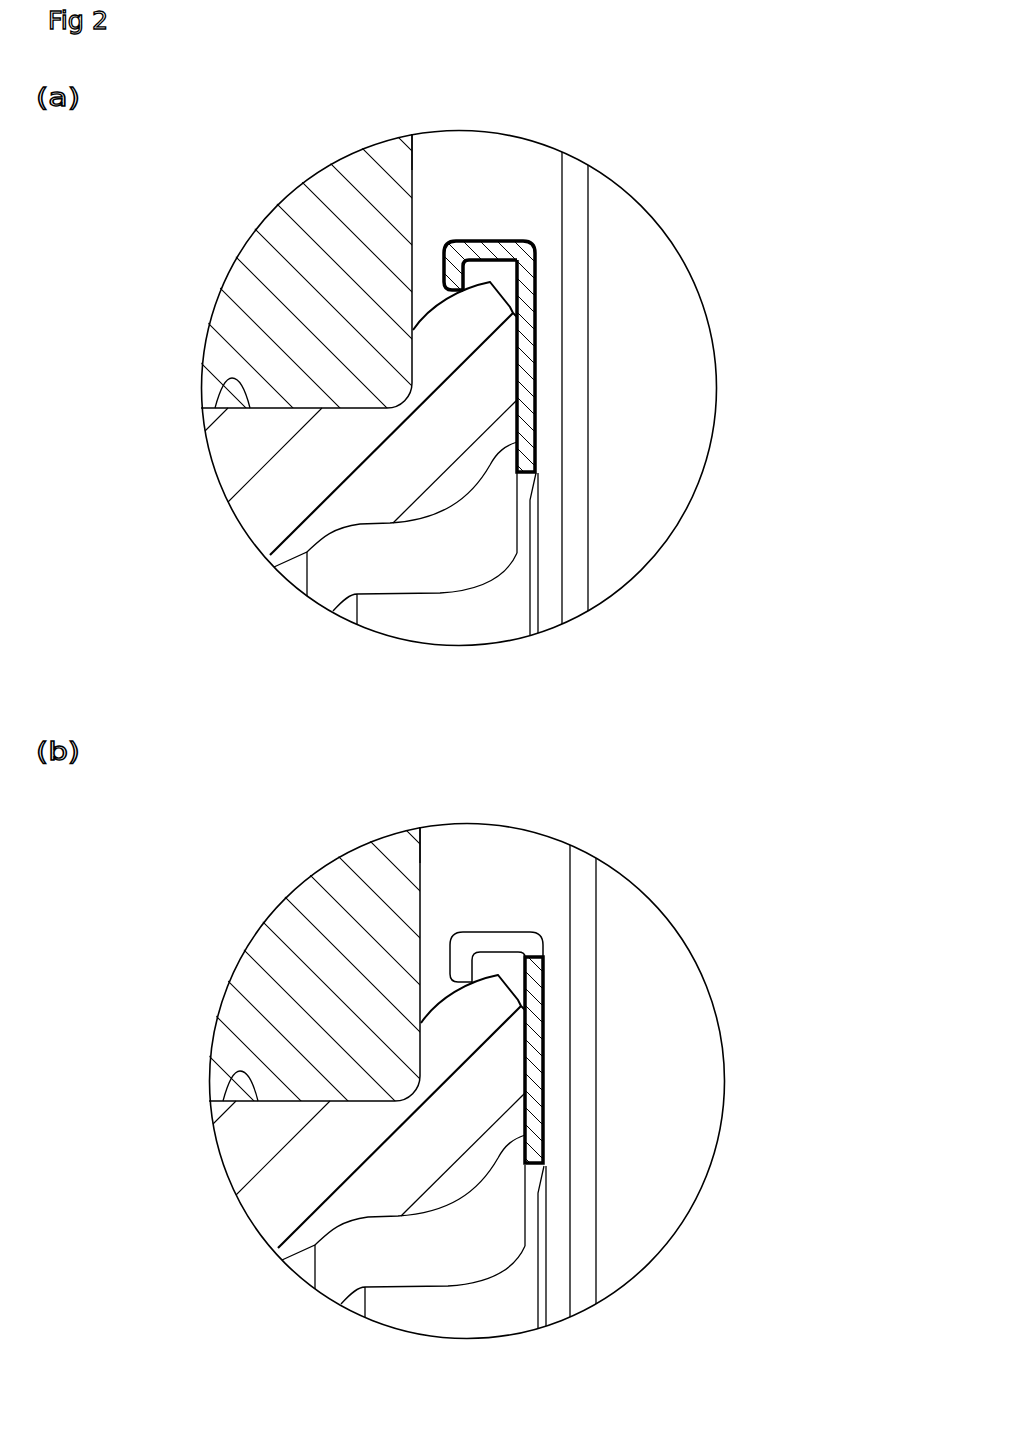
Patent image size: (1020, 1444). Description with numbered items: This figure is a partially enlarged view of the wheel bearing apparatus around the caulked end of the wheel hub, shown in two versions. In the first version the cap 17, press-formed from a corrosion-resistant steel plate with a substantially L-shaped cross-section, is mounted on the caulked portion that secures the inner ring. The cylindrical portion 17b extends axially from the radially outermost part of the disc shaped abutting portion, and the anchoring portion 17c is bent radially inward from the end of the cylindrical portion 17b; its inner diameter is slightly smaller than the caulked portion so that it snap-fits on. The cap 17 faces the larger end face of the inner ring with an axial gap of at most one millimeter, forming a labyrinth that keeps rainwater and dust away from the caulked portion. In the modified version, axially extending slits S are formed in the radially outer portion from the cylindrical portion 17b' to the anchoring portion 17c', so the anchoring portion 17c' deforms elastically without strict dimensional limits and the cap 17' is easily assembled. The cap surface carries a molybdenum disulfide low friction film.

The cap 17 is at (567, 336).
The cap 17' is at (578, 1029).
The cylindrical portion 17b is at (537, 336).
The cylindrical portion 17b' is at (554, 953).
The anchoring portion 17c is at (552, 290).
The anchoring portion 17c' is at (560, 983).
The slits S is at (483, 930).